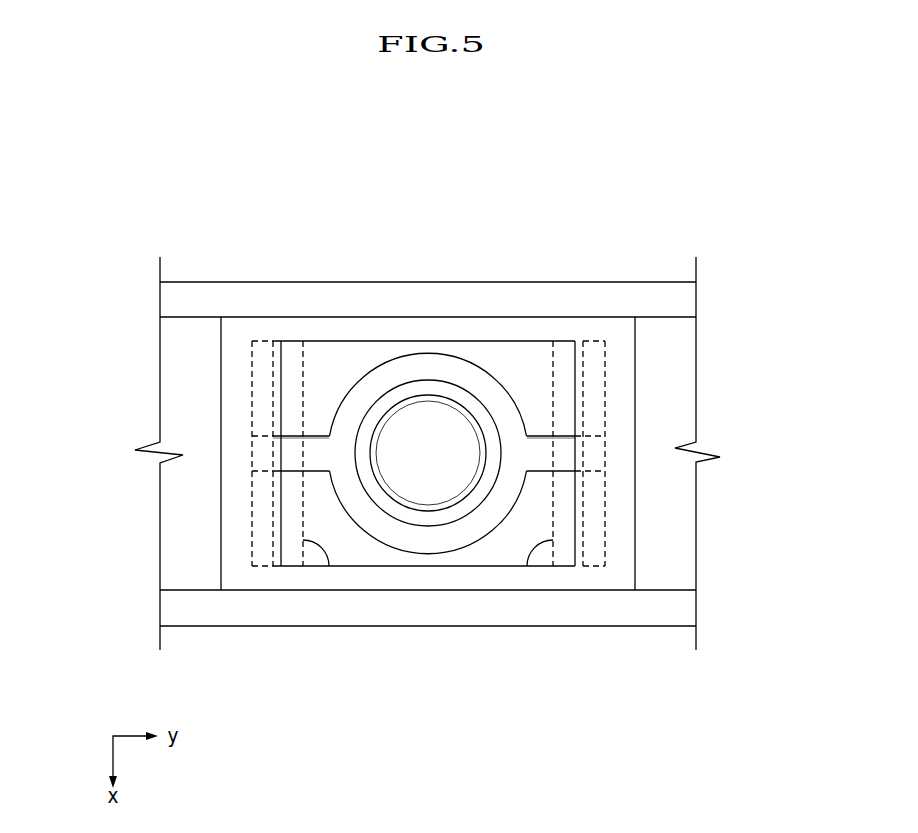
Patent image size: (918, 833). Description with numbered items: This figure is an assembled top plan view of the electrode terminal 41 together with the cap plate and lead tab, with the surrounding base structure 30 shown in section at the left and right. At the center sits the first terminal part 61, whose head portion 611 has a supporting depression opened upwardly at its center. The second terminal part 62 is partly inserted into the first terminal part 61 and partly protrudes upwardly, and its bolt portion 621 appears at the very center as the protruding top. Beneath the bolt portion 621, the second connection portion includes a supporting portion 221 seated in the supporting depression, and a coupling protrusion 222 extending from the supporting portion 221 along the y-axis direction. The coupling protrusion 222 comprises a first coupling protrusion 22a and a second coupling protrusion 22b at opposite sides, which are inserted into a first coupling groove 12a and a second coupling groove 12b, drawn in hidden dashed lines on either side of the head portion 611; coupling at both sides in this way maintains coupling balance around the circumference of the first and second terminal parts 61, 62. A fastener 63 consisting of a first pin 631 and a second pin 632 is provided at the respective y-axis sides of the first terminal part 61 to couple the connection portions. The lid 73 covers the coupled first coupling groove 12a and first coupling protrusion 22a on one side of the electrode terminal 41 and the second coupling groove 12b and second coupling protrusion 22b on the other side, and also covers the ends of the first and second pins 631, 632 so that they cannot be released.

The electrode terminal 41 is at (428, 167).
The base 30 is at (675, 360).
The lid 73 is at (498, 330).
The first terminal part 61 is at (424, 452).
The head portion 611 is at (477, 555).
The second terminal part 62 is at (428, 376).
The bolt portion 621 is at (410, 397).
The supporting portion 221 is at (360, 390).
The coupling protrusion 222 is at (293, 433).
The first coupling protrusion 22a is at (314, 483).
The second coupling protrusion 22b is at (542, 480).
The fastener 63 is at (451, 661).
The first pin 631 is at (327, 562).
The second pin 632 is at (553, 537).
The first coupling groove 12a is at (283, 456).
The second coupling groove 12b is at (562, 470).